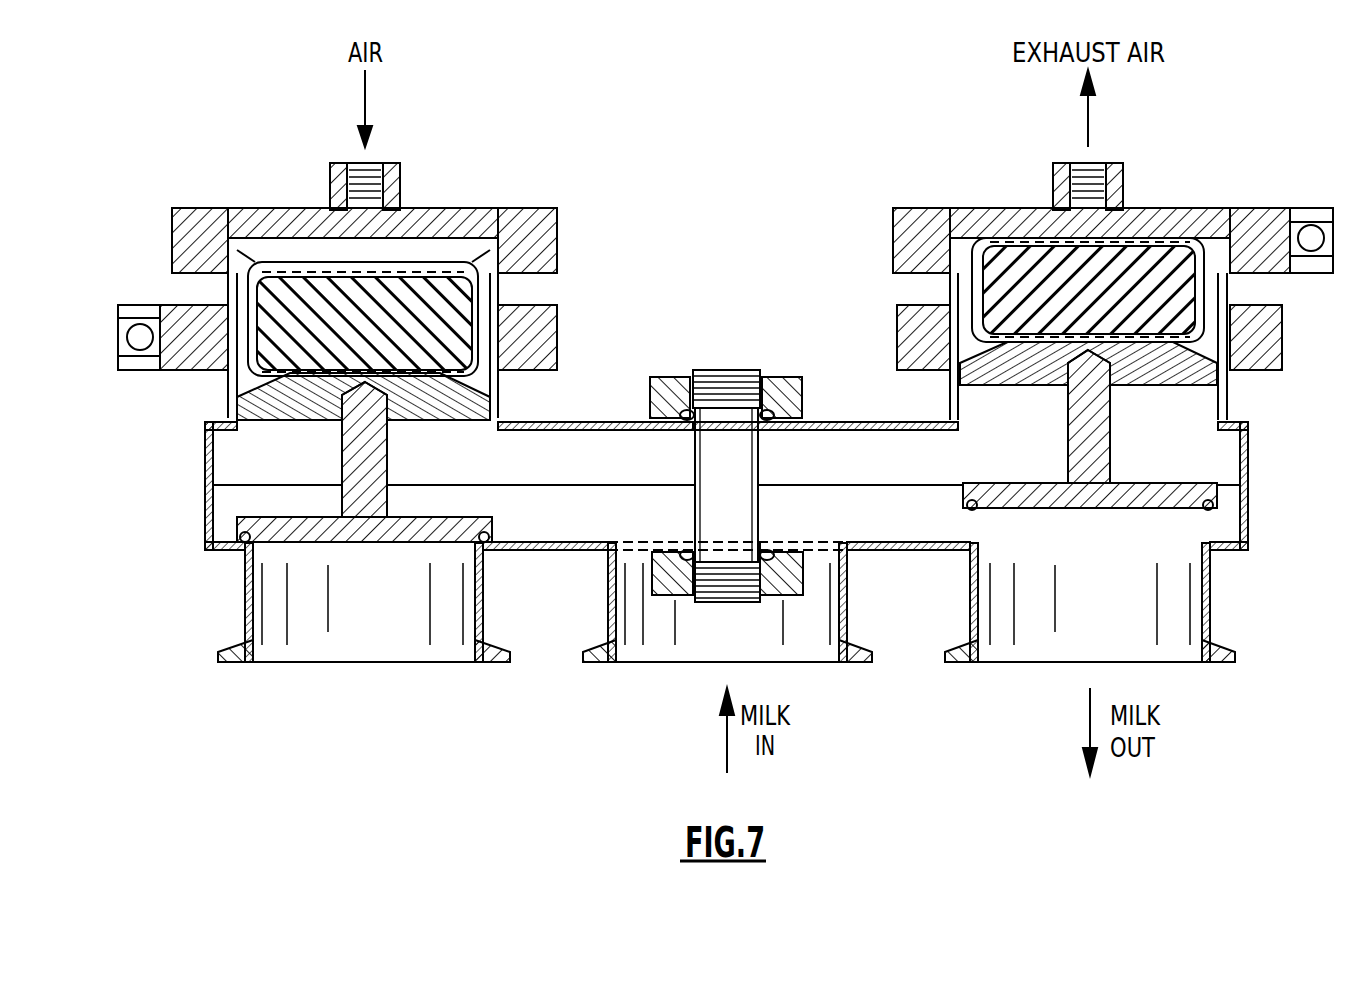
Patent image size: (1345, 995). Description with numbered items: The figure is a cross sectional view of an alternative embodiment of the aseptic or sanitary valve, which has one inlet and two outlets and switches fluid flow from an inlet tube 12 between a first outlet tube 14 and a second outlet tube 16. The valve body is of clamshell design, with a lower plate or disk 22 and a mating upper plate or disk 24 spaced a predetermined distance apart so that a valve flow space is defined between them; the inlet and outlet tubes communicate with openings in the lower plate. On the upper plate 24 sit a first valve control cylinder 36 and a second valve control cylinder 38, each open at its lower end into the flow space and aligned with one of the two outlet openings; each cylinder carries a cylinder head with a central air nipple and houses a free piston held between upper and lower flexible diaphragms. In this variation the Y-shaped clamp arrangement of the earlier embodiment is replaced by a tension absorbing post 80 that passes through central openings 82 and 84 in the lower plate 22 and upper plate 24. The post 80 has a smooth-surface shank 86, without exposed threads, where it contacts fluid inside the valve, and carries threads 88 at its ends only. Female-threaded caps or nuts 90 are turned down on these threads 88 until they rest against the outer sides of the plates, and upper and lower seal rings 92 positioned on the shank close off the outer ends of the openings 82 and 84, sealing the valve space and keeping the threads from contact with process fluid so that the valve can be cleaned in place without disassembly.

The inlet tube 12 is at (583, 656).
The first outlet tube 14 is at (245, 596).
The second outlet tube 16 is at (945, 643).
The lower plate or disk 22 is at (557, 550).
The upper plate or disk 24 is at (840, 421).
The first valve control cylinder 36 is at (549, 186).
The second valve control cylinder 38 is at (884, 238).
The post 80 is at (728, 511).
The central opening 82 is at (760, 543).
The central opening 84 is at (692, 429).
The smooth-surface shank 86 is at (708, 505).
The threads 88 is at (718, 374).
The caps or nuts 90 is at (651, 397).
The seal rings 92 is at (770, 410).